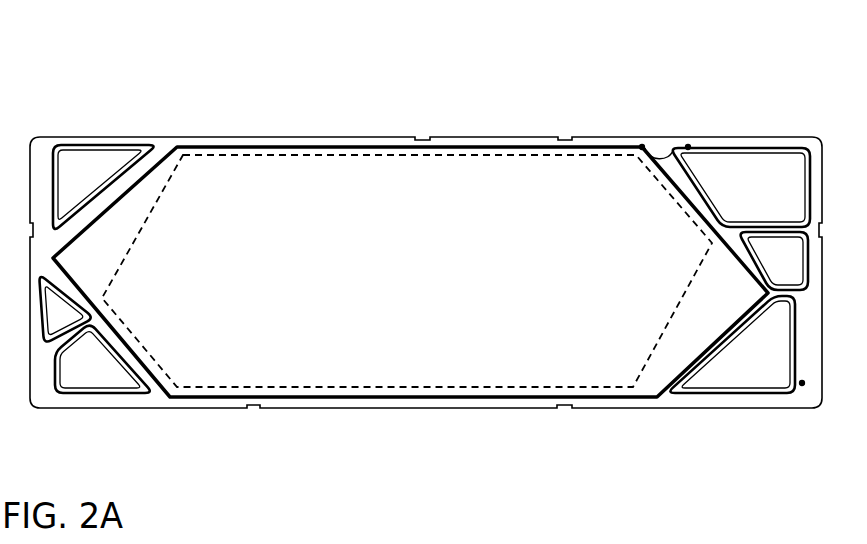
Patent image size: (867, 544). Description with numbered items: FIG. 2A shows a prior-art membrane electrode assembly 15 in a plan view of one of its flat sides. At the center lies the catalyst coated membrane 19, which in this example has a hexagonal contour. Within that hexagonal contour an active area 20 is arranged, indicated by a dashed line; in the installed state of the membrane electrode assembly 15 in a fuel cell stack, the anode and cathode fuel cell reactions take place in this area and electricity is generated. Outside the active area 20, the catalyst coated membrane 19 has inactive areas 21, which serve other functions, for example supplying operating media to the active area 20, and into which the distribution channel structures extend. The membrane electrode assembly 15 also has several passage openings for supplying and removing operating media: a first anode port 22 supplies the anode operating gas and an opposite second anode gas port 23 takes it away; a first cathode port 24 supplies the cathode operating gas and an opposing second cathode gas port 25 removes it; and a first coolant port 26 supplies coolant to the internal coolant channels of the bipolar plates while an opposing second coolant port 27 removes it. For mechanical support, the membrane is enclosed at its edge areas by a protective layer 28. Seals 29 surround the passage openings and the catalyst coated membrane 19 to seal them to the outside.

The membrane electrode assembly 15 is at (162, 97).
The catalyst coated membrane 19 is at (324, 178).
The active area 20 is at (417, 282).
The inactive areas 21 is at (116, 259).
The first anode port 22 is at (76, 322).
The second anode gas port 23 is at (790, 266).
The first cathode port 24 is at (98, 192).
The second cathode gas port 25 is at (756, 380).
The first coolant port 26 is at (103, 380).
The second coolant port 27 is at (755, 195).
The protective layer 28 is at (802, 384).
The seals 29 is at (688, 147).